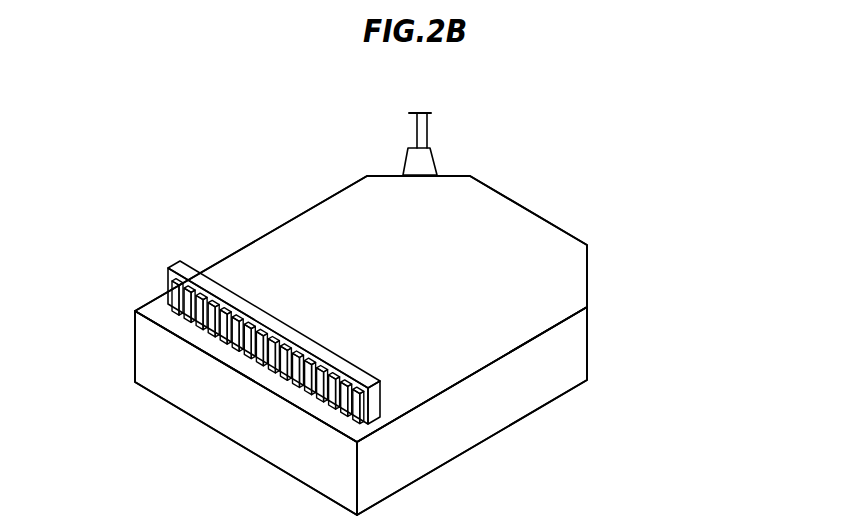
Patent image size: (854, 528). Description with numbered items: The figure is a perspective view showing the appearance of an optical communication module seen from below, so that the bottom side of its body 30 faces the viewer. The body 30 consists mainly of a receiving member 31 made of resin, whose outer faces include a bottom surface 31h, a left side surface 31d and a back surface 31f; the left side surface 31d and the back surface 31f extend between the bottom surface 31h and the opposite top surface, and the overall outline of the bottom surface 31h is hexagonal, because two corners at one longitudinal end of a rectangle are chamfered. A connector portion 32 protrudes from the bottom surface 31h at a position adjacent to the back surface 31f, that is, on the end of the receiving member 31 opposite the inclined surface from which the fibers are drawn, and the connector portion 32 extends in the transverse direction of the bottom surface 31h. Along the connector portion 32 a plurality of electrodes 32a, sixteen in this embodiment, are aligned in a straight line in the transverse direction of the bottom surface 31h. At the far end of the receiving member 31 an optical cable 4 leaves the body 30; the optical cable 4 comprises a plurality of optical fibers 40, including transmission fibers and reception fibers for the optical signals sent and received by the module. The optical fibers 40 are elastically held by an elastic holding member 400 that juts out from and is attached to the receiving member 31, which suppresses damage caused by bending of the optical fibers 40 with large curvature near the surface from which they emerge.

The optical cable 4 is at (453, 104).
The optical fibers 40 is at (418, 133).
The elastic holding member 400 is at (423, 168).
The body 30 is at (223, 168).
The receiving member 31 is at (322, 200).
The bottom surface 31h is at (545, 248).
The left side surface 31d is at (477, 427).
The back surface 31f is at (267, 443).
The connector portion 32 is at (182, 267).
The electrodes 32a is at (175, 295).